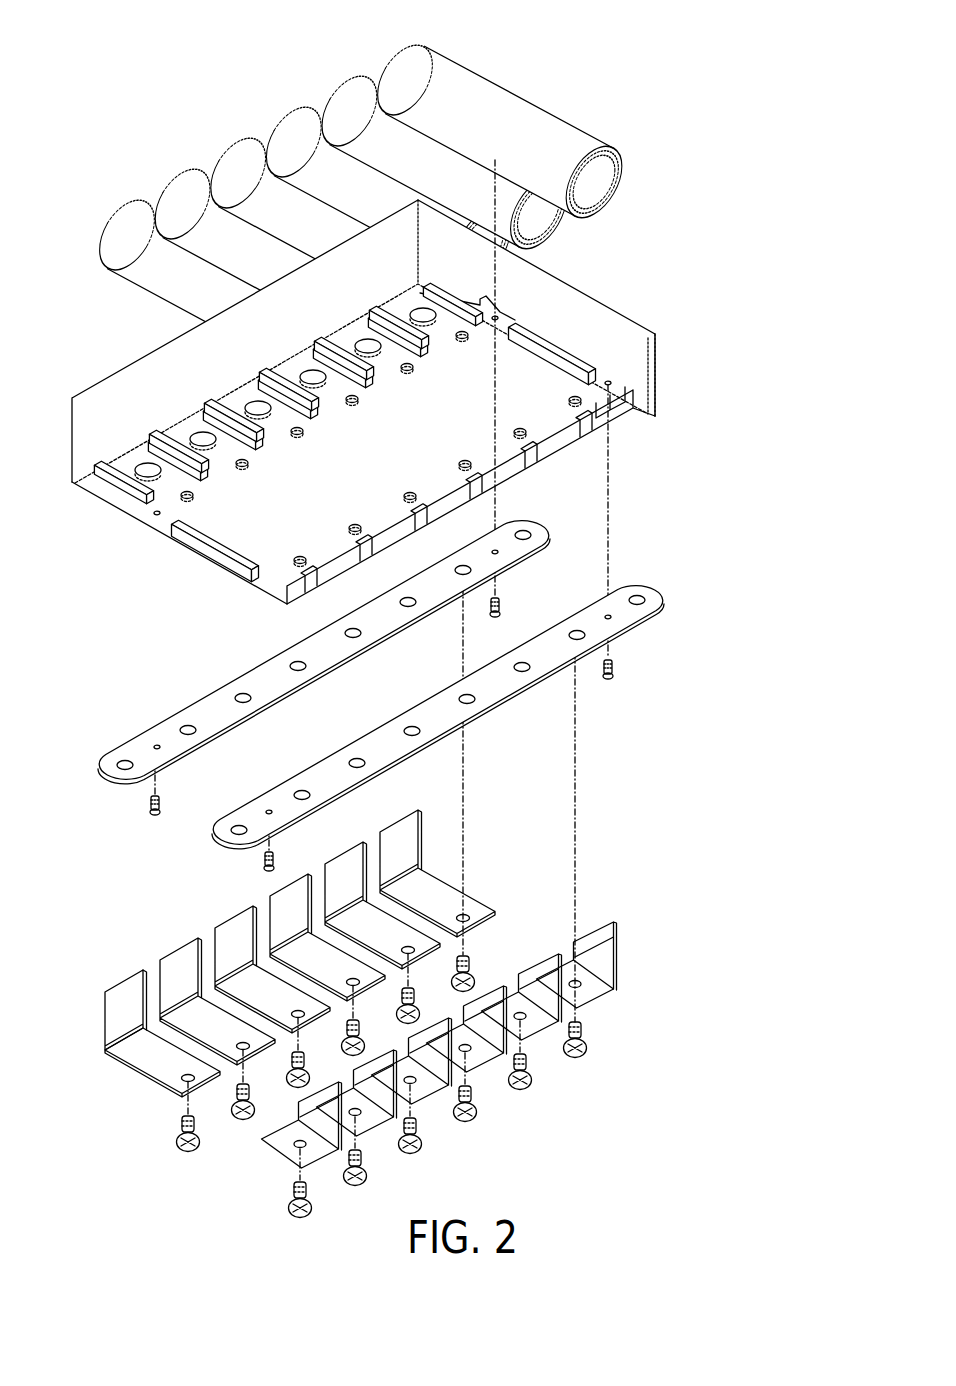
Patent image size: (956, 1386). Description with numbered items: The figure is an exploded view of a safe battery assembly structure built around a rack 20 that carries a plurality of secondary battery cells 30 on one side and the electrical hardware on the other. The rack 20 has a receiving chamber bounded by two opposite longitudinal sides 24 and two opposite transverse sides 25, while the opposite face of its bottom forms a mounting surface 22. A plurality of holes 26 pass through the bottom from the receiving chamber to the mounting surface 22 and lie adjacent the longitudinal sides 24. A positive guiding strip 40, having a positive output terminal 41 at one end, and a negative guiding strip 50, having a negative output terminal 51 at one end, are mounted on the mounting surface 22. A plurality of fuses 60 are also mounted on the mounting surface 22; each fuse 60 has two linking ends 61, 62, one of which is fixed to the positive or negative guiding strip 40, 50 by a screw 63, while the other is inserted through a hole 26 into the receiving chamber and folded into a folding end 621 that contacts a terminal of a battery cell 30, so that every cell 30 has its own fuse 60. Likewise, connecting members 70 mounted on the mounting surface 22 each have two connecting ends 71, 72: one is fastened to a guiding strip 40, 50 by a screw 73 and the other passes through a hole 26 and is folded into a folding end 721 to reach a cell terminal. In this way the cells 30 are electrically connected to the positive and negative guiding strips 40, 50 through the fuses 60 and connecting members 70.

The rack 20 is at (382, 410).
The mounting surface 22 is at (238, 530).
The longitudinal side 24 is at (110, 398).
The transverse side 25 is at (634, 330).
The hole 26 is at (600, 434).
The secondary battery cell 30 is at (540, 130).
The positive guiding strip 40 is at (450, 717).
The positive output terminal 41 is at (647, 605).
The negative guiding strip 50 is at (336, 652).
The negative output terminal 51 is at (528, 545).
The fuse 60 is at (143, 1029).
The linking end 61 is at (176, 1084).
The linking end 62 is at (117, 979).
The folding end 621 is at (150, 985).
The screw 63 is at (184, 1150).
The connecting member 70 is at (608, 965).
The connecting end 71 is at (562, 958).
The connecting end 72 is at (620, 966).
The folding end 721 is at (600, 934).
The screw 73 is at (582, 1062).